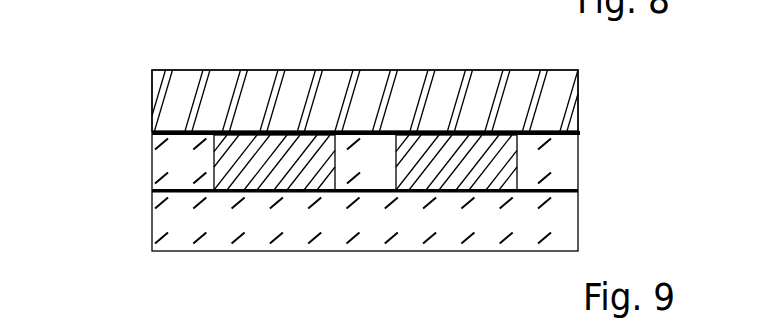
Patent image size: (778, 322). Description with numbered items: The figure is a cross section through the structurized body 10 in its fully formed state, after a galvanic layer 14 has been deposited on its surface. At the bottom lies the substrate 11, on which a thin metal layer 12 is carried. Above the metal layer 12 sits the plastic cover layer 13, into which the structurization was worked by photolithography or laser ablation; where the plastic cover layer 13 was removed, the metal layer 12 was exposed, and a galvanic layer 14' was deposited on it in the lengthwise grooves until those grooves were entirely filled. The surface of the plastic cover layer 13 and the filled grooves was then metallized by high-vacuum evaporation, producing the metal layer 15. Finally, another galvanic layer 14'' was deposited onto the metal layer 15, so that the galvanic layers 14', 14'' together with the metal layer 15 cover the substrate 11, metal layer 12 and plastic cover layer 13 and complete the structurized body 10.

The platelike body 10 is at (122, 218).
The substrate 11 is at (563, 234).
The thin metal layer 12 is at (152, 192).
The plastic cover layer 13 is at (563, 161).
The galvanic layer 14 is at (314, 98).
The galvanic layer 14' is at (365, 115).
The galvanic layer 14'' is at (365, 65).
The metal layer 15 is at (577, 131).